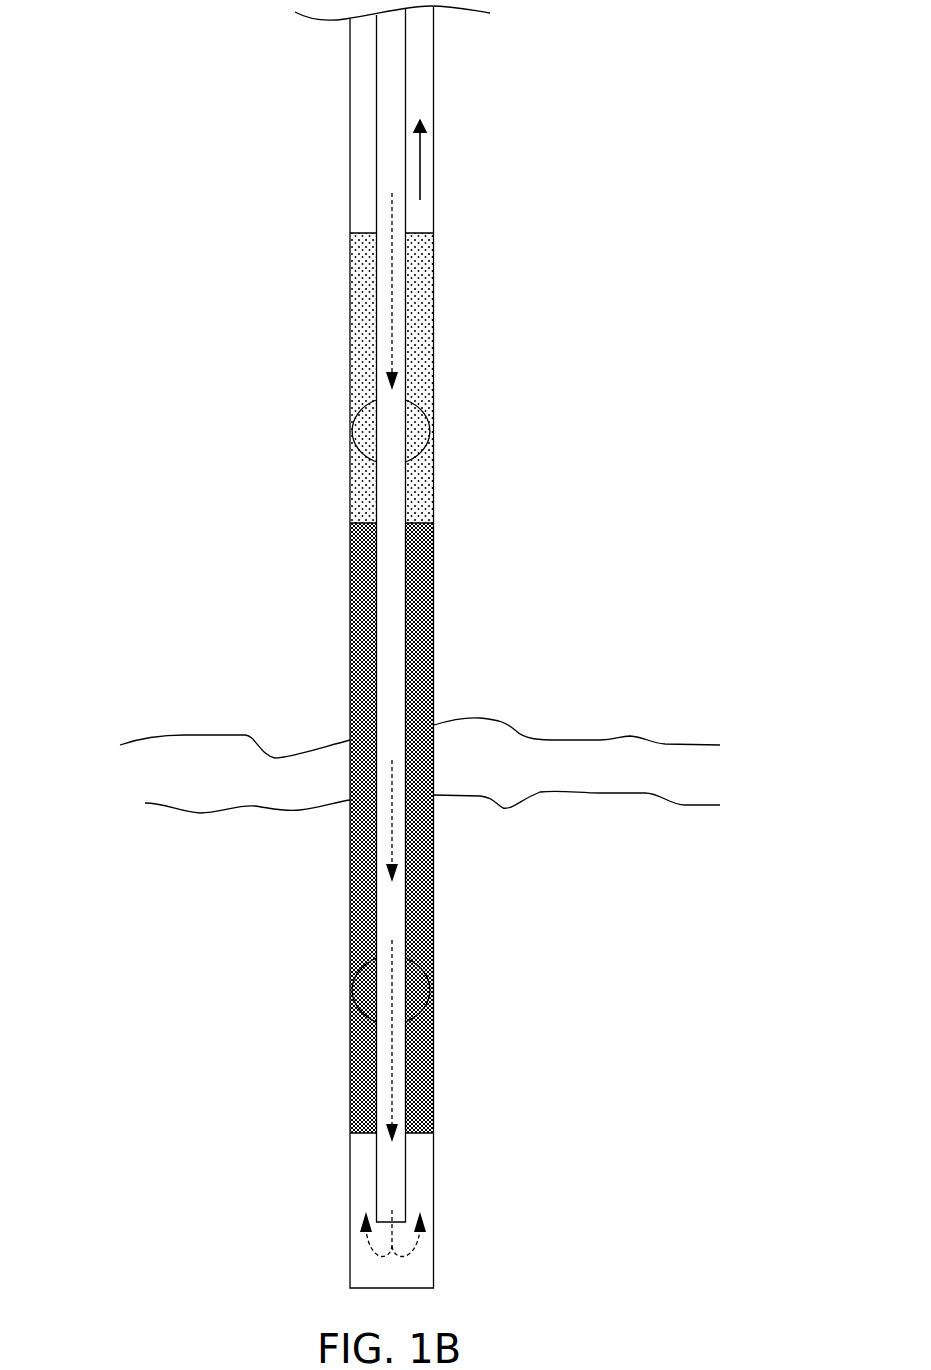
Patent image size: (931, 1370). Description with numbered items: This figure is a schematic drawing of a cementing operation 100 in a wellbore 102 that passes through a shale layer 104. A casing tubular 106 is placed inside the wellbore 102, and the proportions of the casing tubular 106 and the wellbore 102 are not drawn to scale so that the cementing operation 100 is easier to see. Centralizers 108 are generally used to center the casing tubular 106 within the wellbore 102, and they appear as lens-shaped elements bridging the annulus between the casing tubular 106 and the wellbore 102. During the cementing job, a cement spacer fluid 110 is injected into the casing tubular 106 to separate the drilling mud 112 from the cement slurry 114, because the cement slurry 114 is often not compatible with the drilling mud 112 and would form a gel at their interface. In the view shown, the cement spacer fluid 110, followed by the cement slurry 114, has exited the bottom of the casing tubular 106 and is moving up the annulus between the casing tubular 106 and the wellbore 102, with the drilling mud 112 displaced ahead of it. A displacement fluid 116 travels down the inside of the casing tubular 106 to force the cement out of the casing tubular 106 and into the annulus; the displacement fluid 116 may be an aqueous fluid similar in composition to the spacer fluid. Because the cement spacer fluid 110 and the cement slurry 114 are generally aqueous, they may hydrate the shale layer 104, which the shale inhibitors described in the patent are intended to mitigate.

The cementing operation 100 is at (676, 78).
The wellbore 102 is at (434, 553).
The shale layer 104 is at (85, 742).
The casing tubular 106 is at (410, 680).
The centralizers 108 is at (362, 405).
The cement spacer fluid 110 is at (425, 345).
The drilling mud 112 is at (420, 155).
The cement slurry 114 is at (412, 590).
The displacement fluid 116 is at (390, 310).